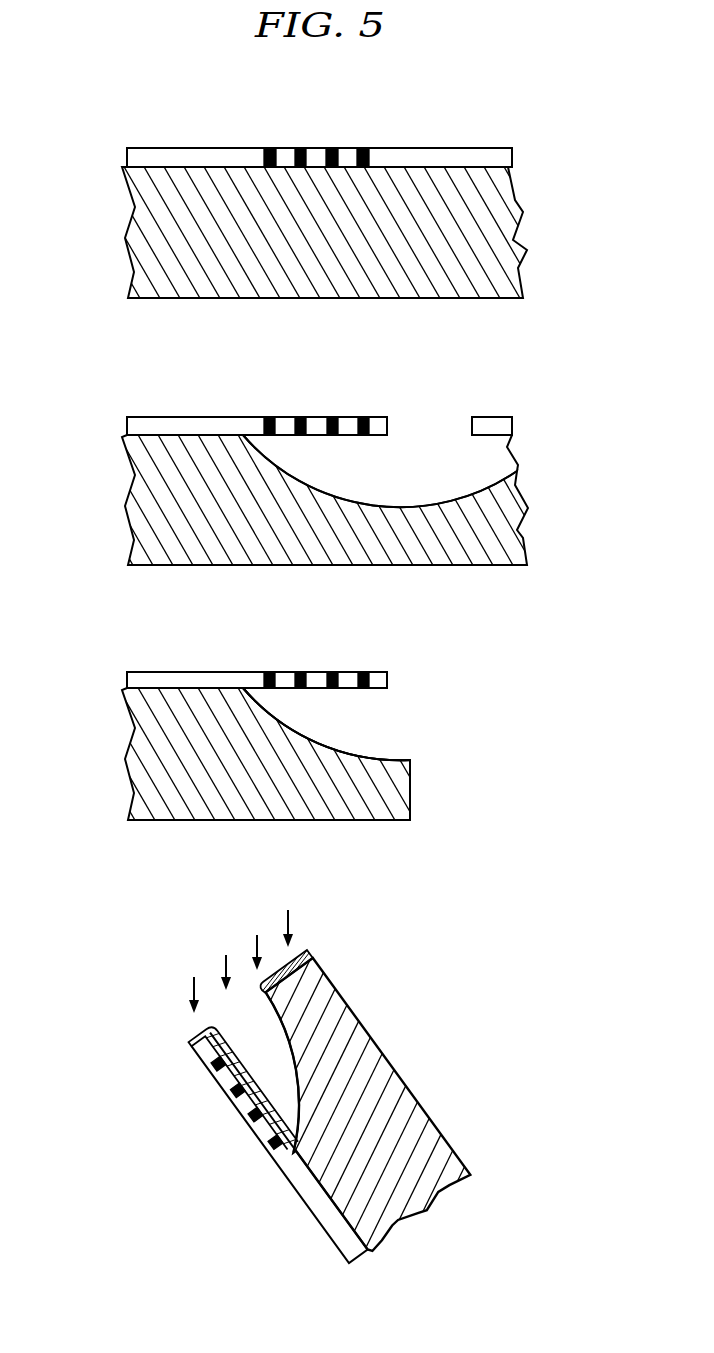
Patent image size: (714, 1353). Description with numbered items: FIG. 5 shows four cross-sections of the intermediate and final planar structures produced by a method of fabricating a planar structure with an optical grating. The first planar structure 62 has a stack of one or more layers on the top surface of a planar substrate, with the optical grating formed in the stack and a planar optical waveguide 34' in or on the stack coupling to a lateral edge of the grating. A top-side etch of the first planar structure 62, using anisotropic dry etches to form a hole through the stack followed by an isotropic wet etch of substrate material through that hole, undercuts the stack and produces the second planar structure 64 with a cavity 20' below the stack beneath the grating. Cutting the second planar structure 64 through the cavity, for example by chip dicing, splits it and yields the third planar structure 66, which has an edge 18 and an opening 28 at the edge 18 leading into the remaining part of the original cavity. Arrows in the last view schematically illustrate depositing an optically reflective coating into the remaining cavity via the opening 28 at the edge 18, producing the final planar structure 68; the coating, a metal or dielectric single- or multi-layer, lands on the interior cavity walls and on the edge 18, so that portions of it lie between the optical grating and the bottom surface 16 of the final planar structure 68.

The bottom surface 16 is at (338, 1103).
The edge 18 is at (439, 753).
The cavity 20' is at (380, 471).
The opening 28 is at (413, 714).
The planar optical waveguide 34' is at (319, 115).
The first planar structure 62 is at (322, 191).
The second planar structure 64 is at (325, 467).
The third planar structure 66 is at (274, 745).
The final planar structure 68 is at (330, 1105).